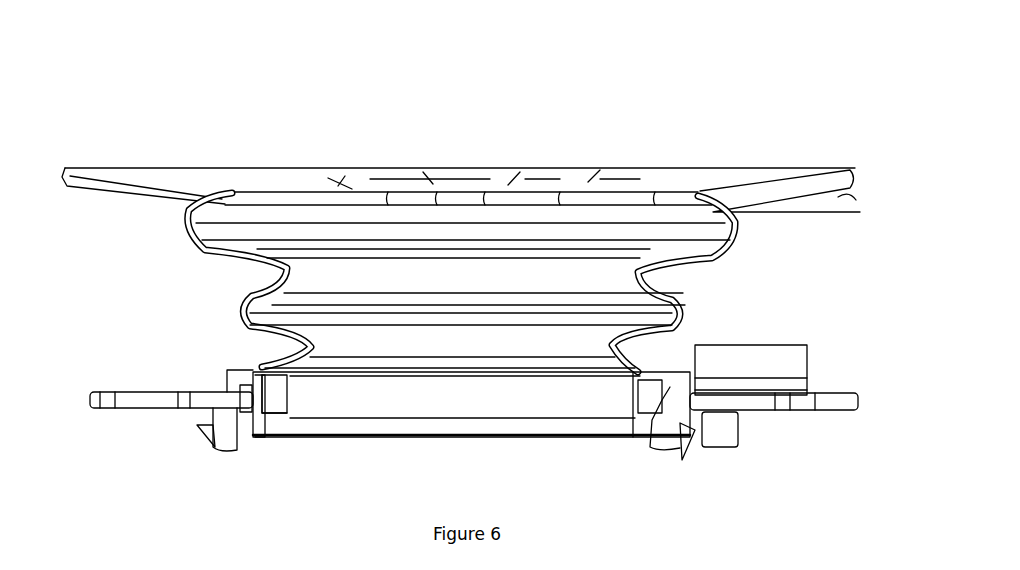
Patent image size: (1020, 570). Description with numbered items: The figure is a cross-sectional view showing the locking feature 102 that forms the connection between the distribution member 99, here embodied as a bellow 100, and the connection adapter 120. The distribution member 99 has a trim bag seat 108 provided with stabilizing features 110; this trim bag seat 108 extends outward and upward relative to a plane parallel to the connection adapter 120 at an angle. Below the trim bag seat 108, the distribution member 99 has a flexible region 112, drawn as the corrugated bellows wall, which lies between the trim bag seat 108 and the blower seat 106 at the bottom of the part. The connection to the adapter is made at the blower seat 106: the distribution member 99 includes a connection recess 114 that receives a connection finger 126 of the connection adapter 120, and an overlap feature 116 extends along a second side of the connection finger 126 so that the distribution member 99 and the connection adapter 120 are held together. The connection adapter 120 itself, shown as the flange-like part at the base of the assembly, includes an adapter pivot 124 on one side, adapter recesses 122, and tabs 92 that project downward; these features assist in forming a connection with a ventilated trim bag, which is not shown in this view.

The distribution member 99 is at (869, 50).
The bellow 100 is at (461, 317).
The trim bag seat 108 is at (98, 168).
The stabilizing features 110 is at (333, 170).
The flexible region 112 is at (185, 363).
The blower seat 106 is at (390, 427).
The overlap feature 116 is at (255, 458).
The connection recess 114 is at (270, 440).
The adapter pivot 124 is at (97, 392).
The connection finger 126 is at (262, 362).
The connection adapter 120 is at (843, 393).
The adapter recesses 122 is at (785, 363).
The tabs 92 is at (728, 433).
The locking feature 102 is at (632, 453).